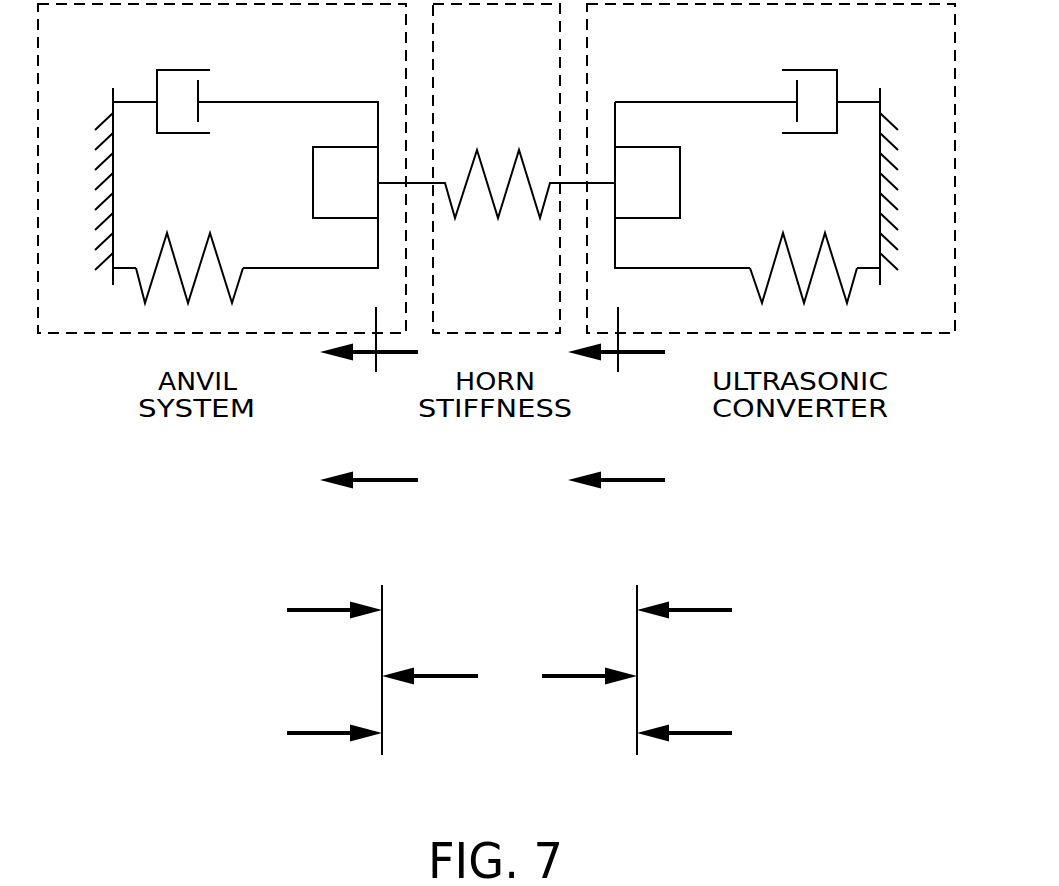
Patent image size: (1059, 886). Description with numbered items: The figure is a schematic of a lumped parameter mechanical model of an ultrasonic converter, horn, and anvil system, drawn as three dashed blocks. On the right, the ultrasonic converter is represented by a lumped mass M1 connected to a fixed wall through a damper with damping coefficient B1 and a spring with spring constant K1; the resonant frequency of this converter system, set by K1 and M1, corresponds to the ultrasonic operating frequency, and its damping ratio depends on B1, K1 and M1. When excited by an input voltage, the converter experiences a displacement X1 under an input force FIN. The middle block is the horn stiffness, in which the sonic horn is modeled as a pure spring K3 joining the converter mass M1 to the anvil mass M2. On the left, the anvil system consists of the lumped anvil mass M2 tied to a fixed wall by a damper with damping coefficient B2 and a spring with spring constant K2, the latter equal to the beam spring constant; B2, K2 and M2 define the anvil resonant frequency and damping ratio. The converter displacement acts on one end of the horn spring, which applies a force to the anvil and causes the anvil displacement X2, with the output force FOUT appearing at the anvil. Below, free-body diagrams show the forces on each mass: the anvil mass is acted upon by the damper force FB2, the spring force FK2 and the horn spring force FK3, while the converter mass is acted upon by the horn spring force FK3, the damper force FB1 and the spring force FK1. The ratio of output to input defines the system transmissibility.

The damping coefficient of ultrasonic anvil B2 is at (183, 77).
The spring constant of ultrasonic anvil K2 is at (189, 244).
The lumped mass of ultrasonic anvil M2 is at (345, 182).
The horn stiffness K3 is at (496, 158).
The lumped mass of ultrasonic converter M1 is at (647, 182).
The damping coefficient of ultrasonic converter B1 is at (809, 77).
The spring constant of ultrasonic converter K1 is at (803, 245).
The anvil displacement X2 is at (369, 365).
The converter displacement X1 is at (616, 365).
The output force FOUT is at (376, 504).
The input force FIN is at (616, 504).
The anvil damper force FB2 is at (334, 590).
The horn spring force FK3 is at (509, 656).
The anvil spring force FK2 is at (334, 757).
The converter damper force FB1 is at (684, 590).
The converter spring force FK1 is at (684, 757).